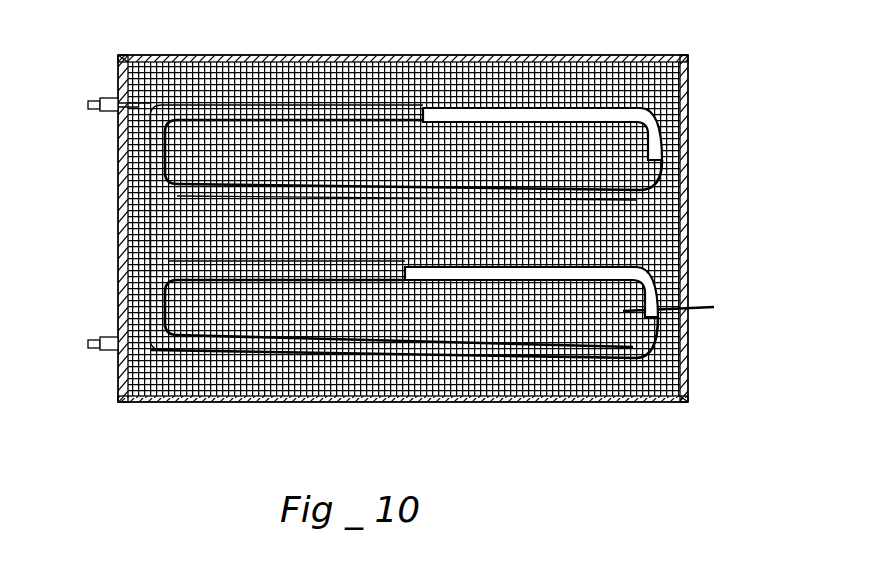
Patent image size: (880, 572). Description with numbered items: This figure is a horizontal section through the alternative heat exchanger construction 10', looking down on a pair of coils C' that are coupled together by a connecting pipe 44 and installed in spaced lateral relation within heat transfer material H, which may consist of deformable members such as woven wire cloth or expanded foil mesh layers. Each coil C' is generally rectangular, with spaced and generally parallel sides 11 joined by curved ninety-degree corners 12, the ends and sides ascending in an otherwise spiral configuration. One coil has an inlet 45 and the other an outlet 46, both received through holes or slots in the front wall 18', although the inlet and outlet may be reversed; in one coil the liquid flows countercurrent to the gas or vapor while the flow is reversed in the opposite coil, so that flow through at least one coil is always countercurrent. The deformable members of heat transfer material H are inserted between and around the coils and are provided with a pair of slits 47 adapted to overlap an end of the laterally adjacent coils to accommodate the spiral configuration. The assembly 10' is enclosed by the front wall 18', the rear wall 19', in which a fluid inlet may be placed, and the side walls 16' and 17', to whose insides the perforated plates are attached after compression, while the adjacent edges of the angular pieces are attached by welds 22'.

The absorber mesh 10' is at (404, 232).
The coil sides 11 is at (55, 318).
The curved corners 12 is at (662, 110).
The side wall 16' is at (403, 40).
The side wall 17' is at (403, 420).
The front wall 18' is at (95, 228).
The rear wall 19' is at (707, 228).
The welds 22' is at (419, 210).
The connecting pipe 44 is at (150, 218).
The inlet 45 is at (90, 352).
The outlet 46 is at (88, 104).
The slits 47 is at (664, 152).
The heat transfer material H is at (413, 88).
The coils C' is at (261, 237).